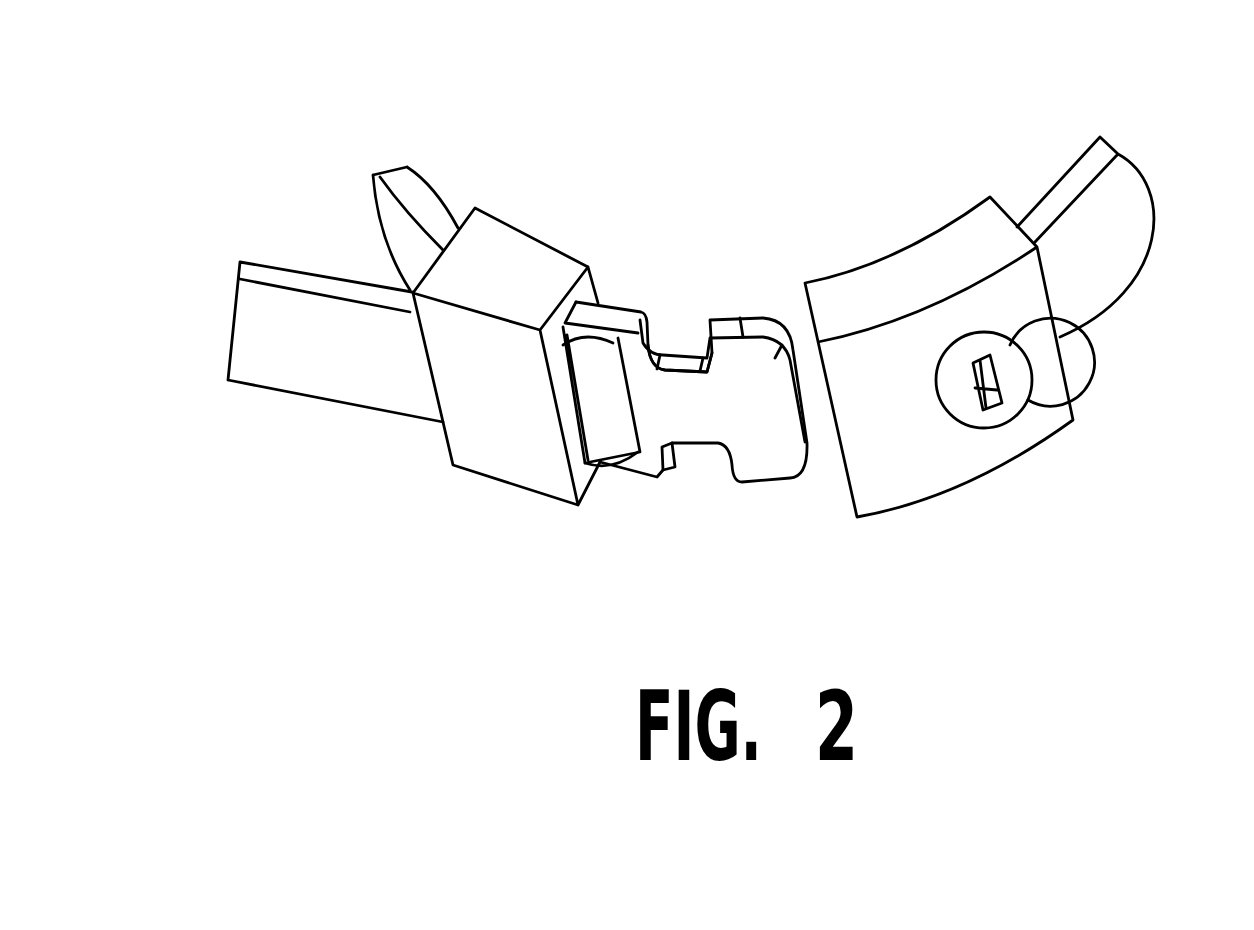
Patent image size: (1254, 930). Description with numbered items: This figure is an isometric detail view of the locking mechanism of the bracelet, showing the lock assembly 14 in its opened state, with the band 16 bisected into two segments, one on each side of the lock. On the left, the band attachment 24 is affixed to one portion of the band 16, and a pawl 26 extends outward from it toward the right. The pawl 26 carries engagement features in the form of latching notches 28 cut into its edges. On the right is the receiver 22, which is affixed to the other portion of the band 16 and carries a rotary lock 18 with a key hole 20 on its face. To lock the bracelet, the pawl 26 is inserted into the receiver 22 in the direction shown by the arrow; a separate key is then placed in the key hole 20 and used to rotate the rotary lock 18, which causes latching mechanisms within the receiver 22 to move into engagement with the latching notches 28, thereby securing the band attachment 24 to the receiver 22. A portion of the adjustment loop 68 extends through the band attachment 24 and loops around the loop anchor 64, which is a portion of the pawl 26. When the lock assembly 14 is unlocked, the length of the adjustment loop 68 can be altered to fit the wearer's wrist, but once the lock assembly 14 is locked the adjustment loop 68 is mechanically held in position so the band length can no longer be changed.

The lock assembly 14 is at (775, 145).
The band 16 is at (392, 187).
The rotary lock 18 is at (1035, 367).
The key hole 20 is at (987, 410).
The receiver 22 is at (1006, 409).
The band attachment 24 is at (510, 227).
The pawl 26 is at (770, 482).
The latching notches 28 is at (672, 348).
The loop anchor 64 is at (717, 394).
The adjustment loop 68 is at (597, 417).